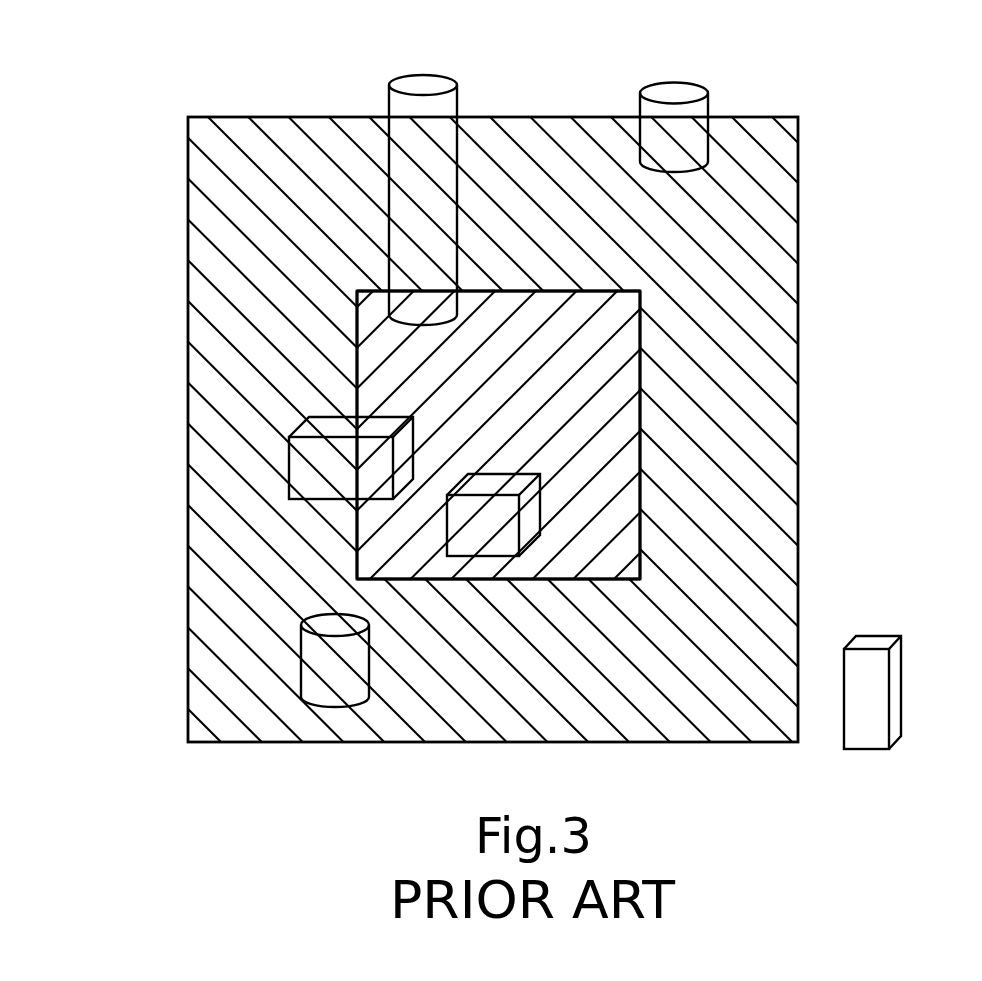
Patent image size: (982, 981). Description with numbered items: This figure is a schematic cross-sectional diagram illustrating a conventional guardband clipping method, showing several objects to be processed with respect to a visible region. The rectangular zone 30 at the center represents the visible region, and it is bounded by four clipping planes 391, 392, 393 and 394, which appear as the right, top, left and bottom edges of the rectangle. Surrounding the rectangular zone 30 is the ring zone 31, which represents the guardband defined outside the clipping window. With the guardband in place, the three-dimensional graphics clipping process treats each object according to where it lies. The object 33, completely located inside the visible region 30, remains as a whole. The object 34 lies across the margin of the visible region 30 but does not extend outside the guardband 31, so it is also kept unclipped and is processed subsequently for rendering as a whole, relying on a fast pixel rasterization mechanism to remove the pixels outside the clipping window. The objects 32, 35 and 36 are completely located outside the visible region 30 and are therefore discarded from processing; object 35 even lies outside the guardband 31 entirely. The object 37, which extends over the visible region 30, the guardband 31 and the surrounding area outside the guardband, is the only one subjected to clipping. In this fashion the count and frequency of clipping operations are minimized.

The rectangular zone 30 is at (612, 440).
The ring zone 31 is at (773, 198).
The object 32 is at (325, 623).
The object 33 is at (483, 529).
The object 34 is at (326, 427).
The object 35 is at (893, 687).
The object 36 is at (677, 92).
The object 37 is at (424, 85).
The clipping plane 391 is at (640, 518).
The clipping plane 392 is at (482, 290).
The clipping plane 393 is at (355, 343).
The clipping plane 394 is at (433, 580).